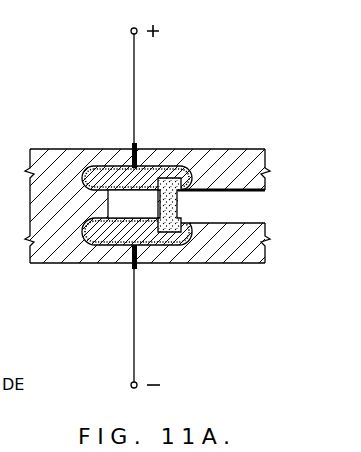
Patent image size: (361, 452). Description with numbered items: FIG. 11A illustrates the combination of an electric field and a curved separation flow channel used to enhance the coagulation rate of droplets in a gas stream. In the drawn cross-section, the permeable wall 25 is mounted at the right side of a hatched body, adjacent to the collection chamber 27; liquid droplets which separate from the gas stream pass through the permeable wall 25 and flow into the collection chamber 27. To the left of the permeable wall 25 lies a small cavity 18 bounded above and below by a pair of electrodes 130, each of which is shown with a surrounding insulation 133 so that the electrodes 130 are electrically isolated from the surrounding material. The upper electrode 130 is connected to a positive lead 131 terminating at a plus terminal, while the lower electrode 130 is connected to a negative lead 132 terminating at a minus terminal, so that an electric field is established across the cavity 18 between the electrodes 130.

The electrode 130 is at (108, 278).
The insulation coating 133 is at (58, 270).
The chamber 18 is at (140, 206).
The collection chamber 27 is at (238, 210).
The permeable wall 25 is at (178, 208).
The positive lead 131 is at (136, 58).
The negative lead 132 is at (136, 317).